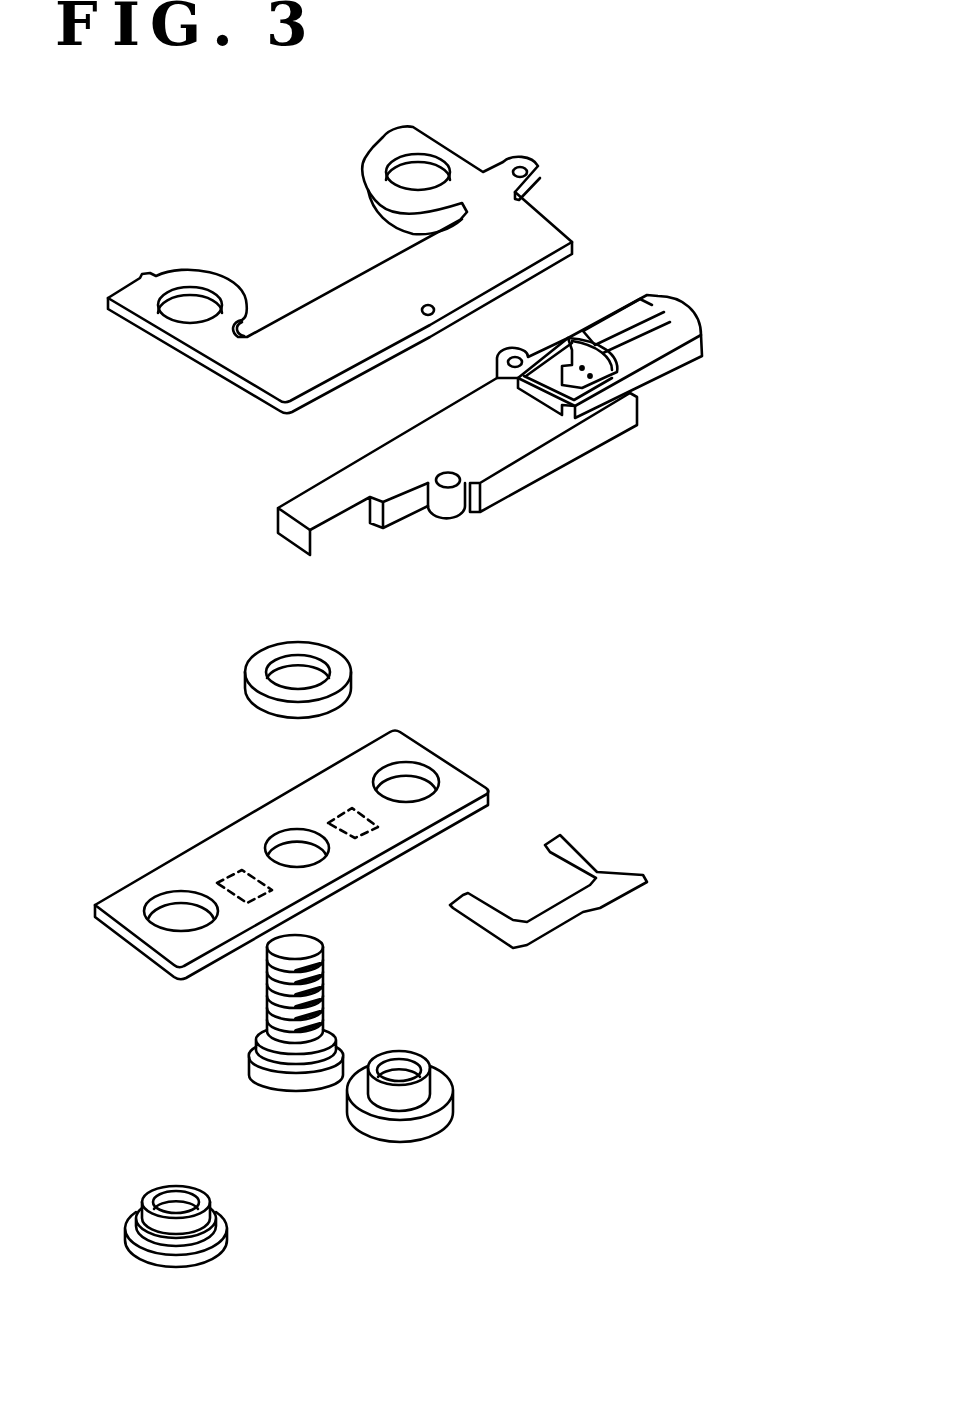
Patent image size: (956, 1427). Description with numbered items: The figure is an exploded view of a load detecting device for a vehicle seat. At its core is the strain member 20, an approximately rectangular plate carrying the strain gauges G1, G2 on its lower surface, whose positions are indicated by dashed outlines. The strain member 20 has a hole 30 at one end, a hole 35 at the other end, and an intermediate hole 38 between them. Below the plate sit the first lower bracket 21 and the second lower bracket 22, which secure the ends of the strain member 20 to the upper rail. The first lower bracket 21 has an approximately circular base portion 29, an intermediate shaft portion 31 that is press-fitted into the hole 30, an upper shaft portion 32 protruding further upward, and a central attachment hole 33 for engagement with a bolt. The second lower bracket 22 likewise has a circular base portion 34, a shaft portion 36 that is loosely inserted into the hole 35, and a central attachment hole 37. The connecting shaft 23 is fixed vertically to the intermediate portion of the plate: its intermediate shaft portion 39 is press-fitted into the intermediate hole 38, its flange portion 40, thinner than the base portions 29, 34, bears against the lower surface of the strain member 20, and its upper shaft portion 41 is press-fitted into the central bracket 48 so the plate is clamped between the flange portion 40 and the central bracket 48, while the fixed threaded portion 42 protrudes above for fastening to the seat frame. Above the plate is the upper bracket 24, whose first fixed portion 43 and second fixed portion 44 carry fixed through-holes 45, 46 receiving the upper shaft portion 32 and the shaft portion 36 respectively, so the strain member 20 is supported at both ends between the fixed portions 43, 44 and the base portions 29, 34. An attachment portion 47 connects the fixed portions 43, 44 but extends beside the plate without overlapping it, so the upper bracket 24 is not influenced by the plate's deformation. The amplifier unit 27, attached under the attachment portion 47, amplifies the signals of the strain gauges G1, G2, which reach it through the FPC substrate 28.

The strain member 20 is at (315, 829).
The first lower bracket 21 is at (169, 1232).
The second lower bracket 22 is at (434, 1097).
The connecting shaft 23 is at (249, 1047).
The upper bracket 24 is at (358, 234).
The amplifier unit 27 is at (612, 424).
The FPC substrate 28 is at (602, 866).
The base portion 29 is at (133, 1249).
The hole 30 is at (176, 905).
The intermediate shaft portion 31 is at (205, 1241).
The upper shaft portion 32 is at (163, 1228).
The attachment hole 33 is at (168, 1199).
The base portion 34 is at (398, 1141).
The hole 35 is at (418, 776).
The shaft portion 36 is at (424, 1094).
The attachment hole 37 is at (401, 1066).
The intermediate hole 38 is at (308, 853).
The intermediate shaft portion 39 is at (277, 1065).
The flange portion 40 is at (297, 1082).
The upper shaft portion 41 is at (268, 1041).
The fixed threaded portion 42 is at (278, 986).
The first fixed portion 43 is at (140, 292).
The second fixed portion 44 is at (403, 137).
The fixed through-hole 45 is at (186, 300).
The fixed through-hole 46 is at (425, 172).
The attachment portion 47 is at (538, 270).
The central bracket 48 is at (268, 657).
The strain gauge G1 is at (232, 876).
The strain gauge G2 is at (340, 814).